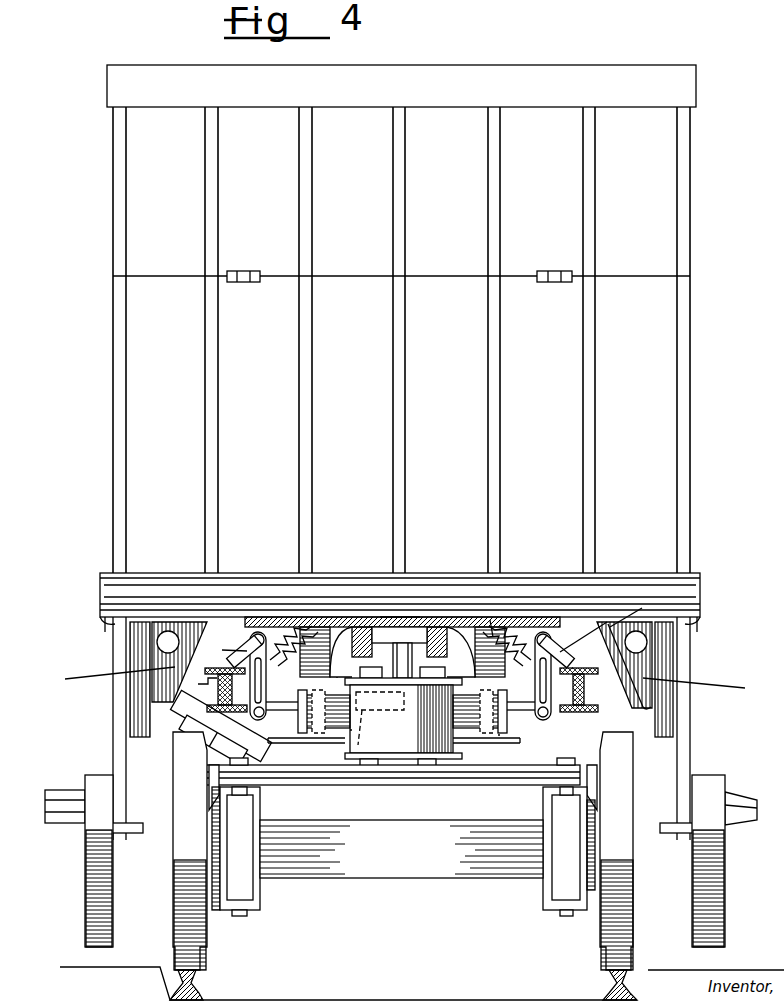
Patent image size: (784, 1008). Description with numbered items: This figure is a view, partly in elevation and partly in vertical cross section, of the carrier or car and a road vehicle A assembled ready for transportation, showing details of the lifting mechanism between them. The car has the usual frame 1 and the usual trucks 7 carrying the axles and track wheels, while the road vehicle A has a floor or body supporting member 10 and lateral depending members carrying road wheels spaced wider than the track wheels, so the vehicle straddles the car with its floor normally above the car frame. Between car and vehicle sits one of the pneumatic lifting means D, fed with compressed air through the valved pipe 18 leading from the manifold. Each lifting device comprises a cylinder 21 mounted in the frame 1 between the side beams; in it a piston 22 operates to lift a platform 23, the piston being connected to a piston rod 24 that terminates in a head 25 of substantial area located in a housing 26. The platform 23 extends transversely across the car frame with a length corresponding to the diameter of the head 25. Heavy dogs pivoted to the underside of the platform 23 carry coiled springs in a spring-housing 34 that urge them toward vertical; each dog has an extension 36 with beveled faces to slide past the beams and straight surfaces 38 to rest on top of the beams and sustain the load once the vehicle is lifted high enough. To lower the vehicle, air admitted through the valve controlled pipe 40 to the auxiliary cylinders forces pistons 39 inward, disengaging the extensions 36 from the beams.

The frame 1 is at (315, 780).
The trucks 7 is at (455, 782).
The floor or body supporting member 10 is at (428, 582).
The valved pipe 18 is at (305, 744).
The cylinder 21 is at (403, 722).
The piston 22 is at (363, 738).
The platform 23 is at (462, 619).
The piston rod 24 is at (415, 670).
The head 25 is at (392, 655).
The housing 26 is at (395, 617).
The spring-housing 34 is at (490, 620).
The extension 36 is at (240, 660).
The straight surfaces 38 is at (580, 668).
The pistons 39 is at (322, 745).
The valve controlled pipe 40 is at (498, 735).
The road vehicle A is at (401, 319).
The pneumatic lifting means D is at (487, 750).